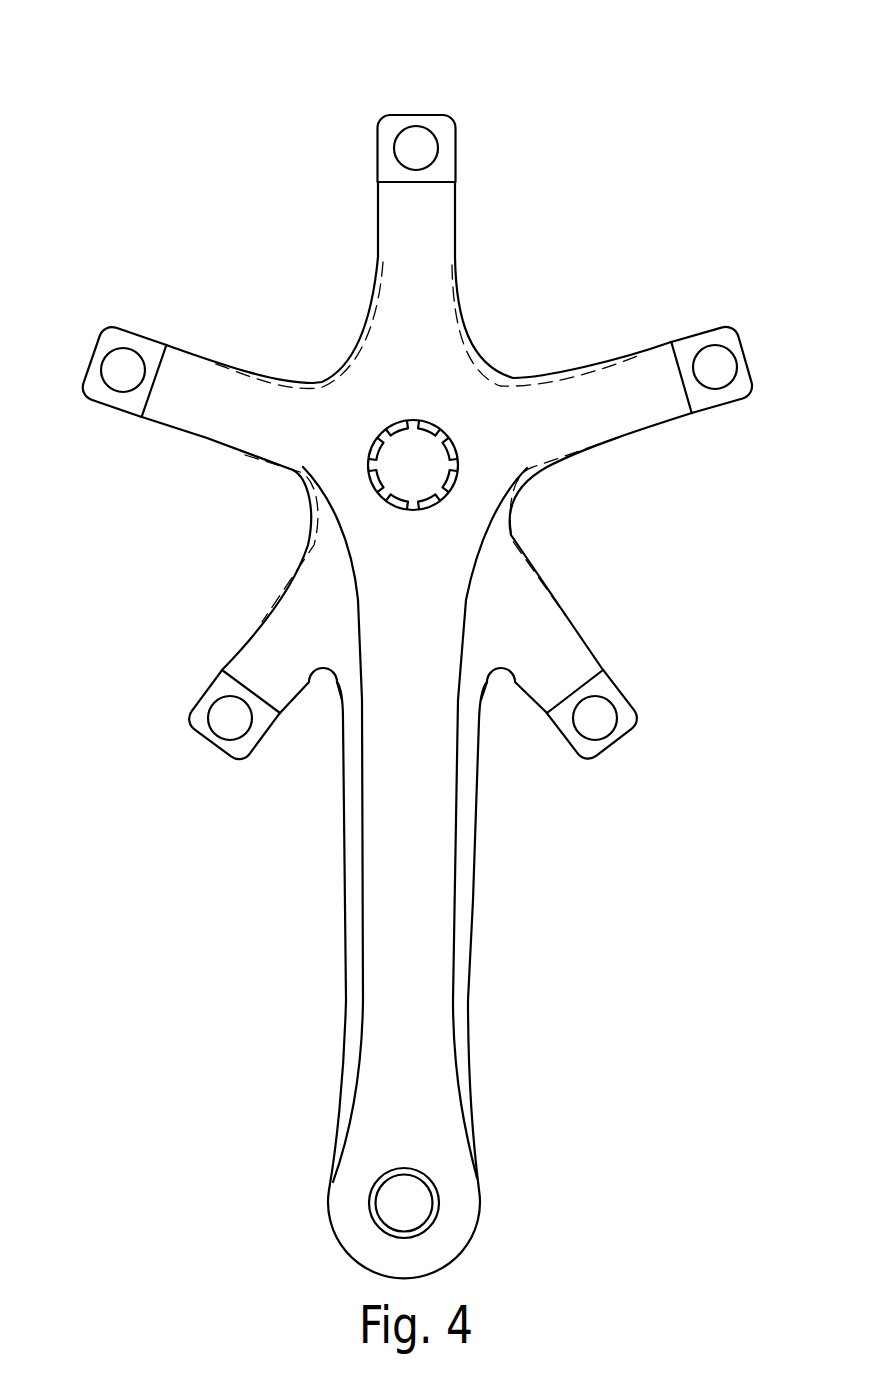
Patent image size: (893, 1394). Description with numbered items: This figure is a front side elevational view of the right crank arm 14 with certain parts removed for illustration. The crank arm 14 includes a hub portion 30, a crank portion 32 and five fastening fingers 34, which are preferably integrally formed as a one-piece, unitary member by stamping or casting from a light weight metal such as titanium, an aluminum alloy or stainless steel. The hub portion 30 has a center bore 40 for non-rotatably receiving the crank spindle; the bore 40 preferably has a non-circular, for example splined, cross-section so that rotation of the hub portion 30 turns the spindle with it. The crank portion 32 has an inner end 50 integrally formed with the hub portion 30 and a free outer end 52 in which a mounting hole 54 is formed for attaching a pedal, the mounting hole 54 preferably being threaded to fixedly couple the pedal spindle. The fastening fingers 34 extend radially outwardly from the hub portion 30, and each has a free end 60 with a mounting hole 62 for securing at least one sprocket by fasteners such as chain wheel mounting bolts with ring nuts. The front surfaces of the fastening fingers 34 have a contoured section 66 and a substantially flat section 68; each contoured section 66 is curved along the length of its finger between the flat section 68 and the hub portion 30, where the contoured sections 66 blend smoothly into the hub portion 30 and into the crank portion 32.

The right crank arm 14 is at (660, 93).
The hub portion 30 is at (476, 357).
The crank portion 32 is at (460, 872).
The fastening fingers 34 is at (458, 206).
The center bore 40 is at (448, 430).
The inner end 50 is at (480, 773).
The free outer end 52 is at (473, 1130).
The mounting hole 54 is at (418, 1208).
The free end 60 is at (412, 127).
The mounting hole 62 is at (410, 147).
The contoured section 66 is at (428, 247).
The flat section 68 is at (447, 144).